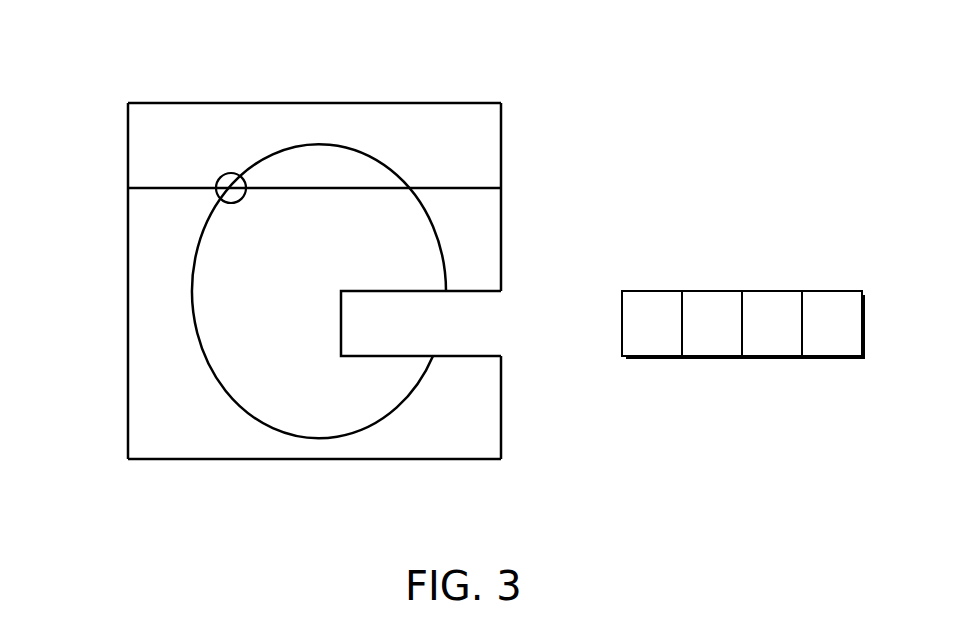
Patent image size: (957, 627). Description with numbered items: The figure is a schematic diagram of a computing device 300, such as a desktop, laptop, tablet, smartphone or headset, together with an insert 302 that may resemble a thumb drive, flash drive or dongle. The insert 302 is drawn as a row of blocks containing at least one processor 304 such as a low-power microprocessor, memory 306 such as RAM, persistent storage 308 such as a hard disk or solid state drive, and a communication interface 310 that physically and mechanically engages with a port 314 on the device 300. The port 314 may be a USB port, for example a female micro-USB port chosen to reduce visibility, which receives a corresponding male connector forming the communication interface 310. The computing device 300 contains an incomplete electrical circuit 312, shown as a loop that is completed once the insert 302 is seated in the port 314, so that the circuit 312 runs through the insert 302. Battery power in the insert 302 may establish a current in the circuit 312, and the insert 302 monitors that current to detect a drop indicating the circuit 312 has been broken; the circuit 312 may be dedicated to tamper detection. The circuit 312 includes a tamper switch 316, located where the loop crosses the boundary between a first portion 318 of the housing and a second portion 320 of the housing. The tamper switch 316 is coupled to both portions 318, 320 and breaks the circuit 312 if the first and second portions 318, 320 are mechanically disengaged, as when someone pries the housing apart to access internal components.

The computing device 300 is at (147, 62).
The insert 302 is at (745, 358).
The processor 304 is at (833, 290).
The memory 306 is at (772, 290).
The persistent storage 308 is at (712, 290).
The communication interface 310 is at (652, 290).
The incomplete electrical circuit 312 is at (226, 395).
The port 314 is at (421, 323).
The tamper switch 316 is at (220, 177).
The first portion of the housing 318 is at (315, 103).
The second portion of the housing 320 is at (433, 460).